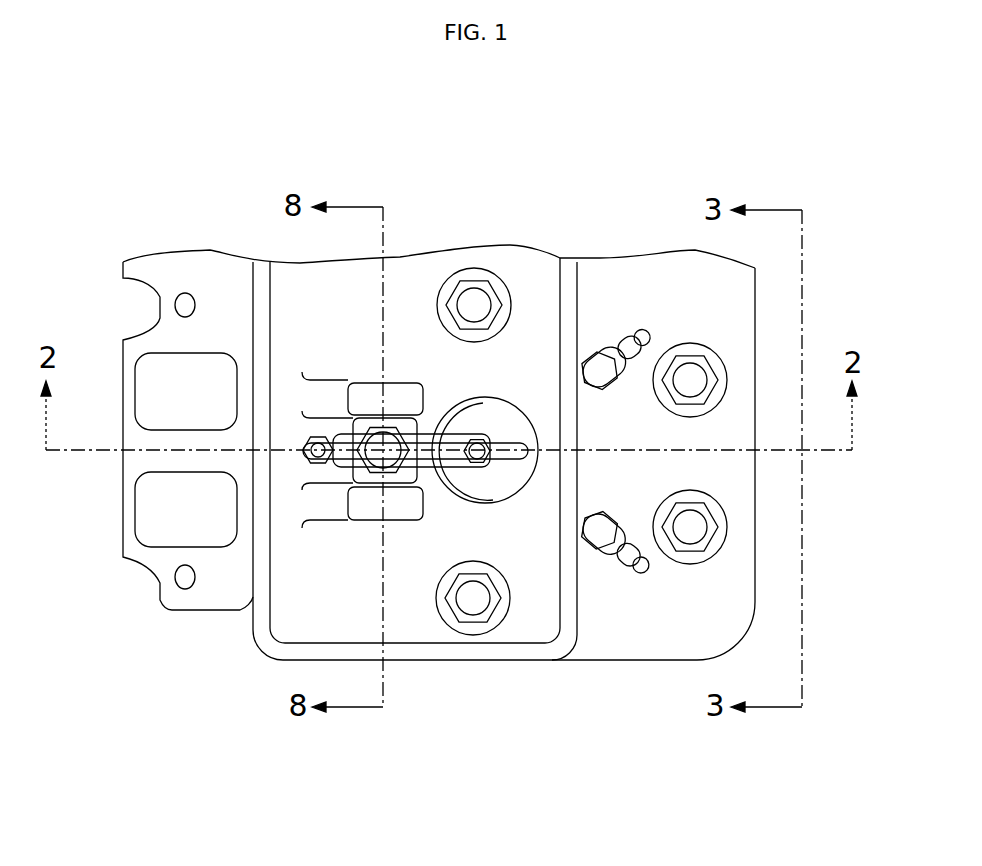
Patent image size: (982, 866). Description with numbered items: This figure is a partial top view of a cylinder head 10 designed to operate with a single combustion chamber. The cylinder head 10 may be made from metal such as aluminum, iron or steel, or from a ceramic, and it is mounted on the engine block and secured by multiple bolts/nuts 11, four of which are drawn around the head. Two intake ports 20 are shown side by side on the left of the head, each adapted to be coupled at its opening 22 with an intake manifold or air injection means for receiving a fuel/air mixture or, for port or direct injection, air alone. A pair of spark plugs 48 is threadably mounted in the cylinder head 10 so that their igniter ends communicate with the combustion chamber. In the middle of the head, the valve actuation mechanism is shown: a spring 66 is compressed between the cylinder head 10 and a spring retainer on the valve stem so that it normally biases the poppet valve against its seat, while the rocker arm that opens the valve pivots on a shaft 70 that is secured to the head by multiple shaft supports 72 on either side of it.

The cylinder head 10 is at (346, 736).
The bolts/nuts 11 is at (475, 305).
The intake port 20 is at (186, 450).
The opening 22 is at (140, 370).
The spark plug 48 is at (612, 362).
The spring 66 is at (508, 405).
The shaft 70 is at (410, 425).
The shaft supports 72 is at (380, 400).